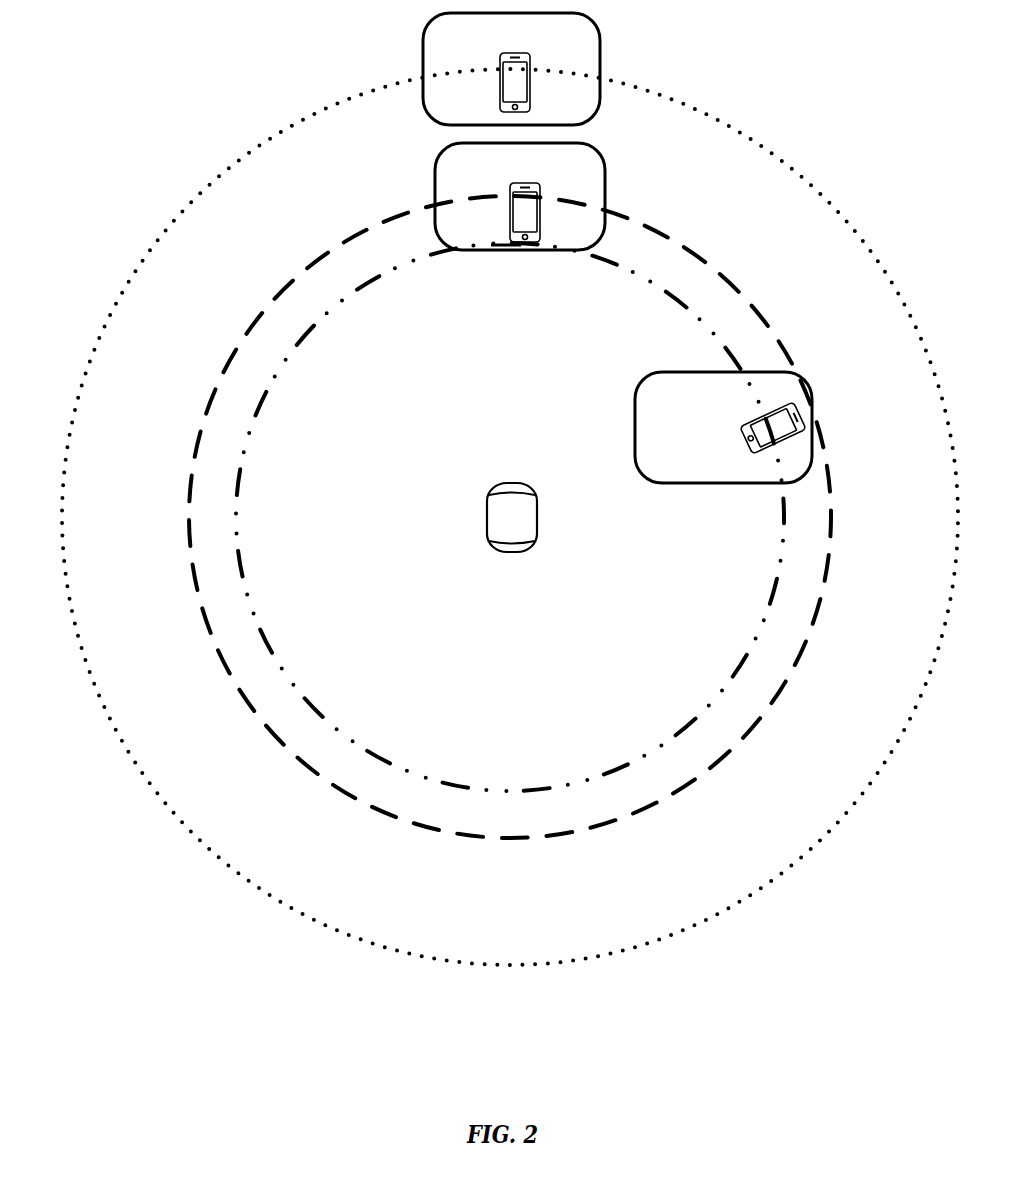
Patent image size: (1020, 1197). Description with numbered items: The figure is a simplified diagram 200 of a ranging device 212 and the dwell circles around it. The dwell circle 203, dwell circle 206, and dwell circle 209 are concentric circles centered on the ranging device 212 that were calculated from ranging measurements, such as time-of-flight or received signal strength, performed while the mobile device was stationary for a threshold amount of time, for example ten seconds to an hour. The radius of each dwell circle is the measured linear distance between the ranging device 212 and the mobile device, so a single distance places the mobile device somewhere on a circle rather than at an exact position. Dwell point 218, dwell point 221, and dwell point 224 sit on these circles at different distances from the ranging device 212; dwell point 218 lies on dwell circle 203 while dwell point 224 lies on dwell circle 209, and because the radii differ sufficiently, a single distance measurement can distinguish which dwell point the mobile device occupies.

The simplified diagram 200 is at (126, 1108).
The dwell circle 203 is at (256, 432).
The dwell circle 206 is at (190, 511).
The dwell circle 209 is at (84, 430).
The ranging device 212 is at (485, 505).
The dwell point 218 is at (798, 404).
The dwell point 221 is at (596, 174).
The dwell point 224 is at (588, 44).